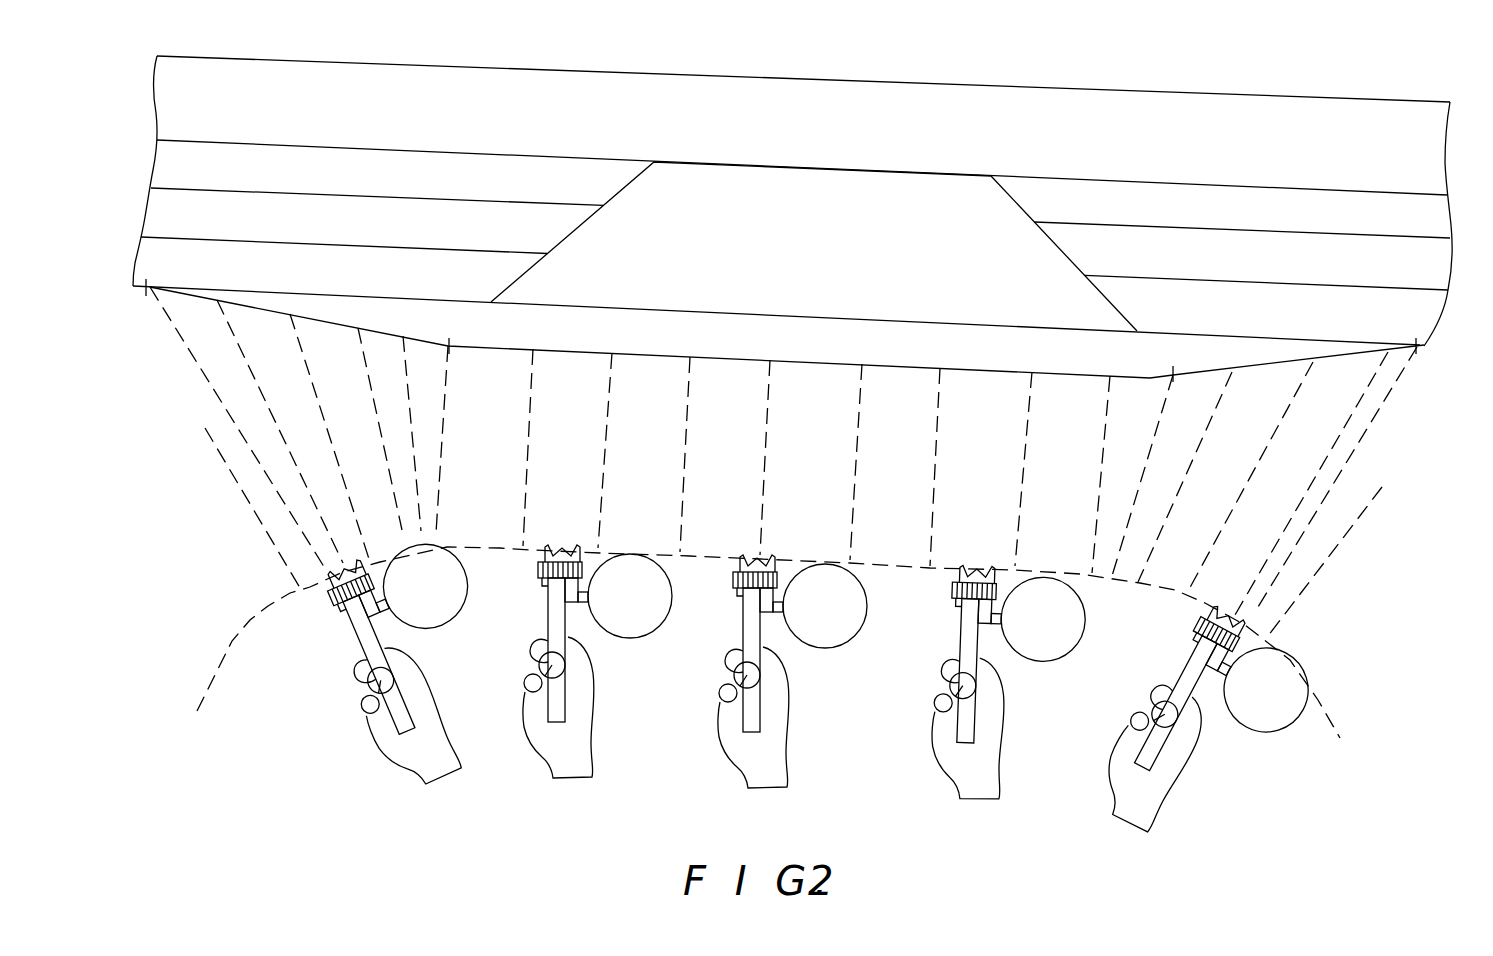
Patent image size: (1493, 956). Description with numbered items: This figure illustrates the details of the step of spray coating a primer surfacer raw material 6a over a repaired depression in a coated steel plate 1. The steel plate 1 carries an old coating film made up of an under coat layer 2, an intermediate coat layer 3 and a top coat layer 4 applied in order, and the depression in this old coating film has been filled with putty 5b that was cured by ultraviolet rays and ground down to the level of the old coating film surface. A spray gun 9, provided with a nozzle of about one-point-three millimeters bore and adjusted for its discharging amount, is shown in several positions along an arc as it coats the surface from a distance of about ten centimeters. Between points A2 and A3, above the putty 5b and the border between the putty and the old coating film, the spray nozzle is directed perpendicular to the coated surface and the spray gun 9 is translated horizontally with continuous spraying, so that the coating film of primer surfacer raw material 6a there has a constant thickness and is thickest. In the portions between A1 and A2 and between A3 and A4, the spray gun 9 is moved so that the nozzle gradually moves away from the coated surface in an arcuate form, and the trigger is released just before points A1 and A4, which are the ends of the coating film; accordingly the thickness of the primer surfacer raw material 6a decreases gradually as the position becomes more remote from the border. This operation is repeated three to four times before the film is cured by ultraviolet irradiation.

The steel plate 1 is at (874, 100).
The under coat layer 2 is at (1425, 213).
The intermediate coat layer 3 is at (1432, 258).
The top coat layer 4 is at (1428, 300).
The putty 5b is at (814, 246).
The primer surfacer raw material 6a is at (787, 332).
The spray gun 9 is at (743, 631).
The point A1 is at (147, 277).
The point A2 is at (449, 336).
The point A3 is at (1169, 364).
The point A4 is at (1413, 335).